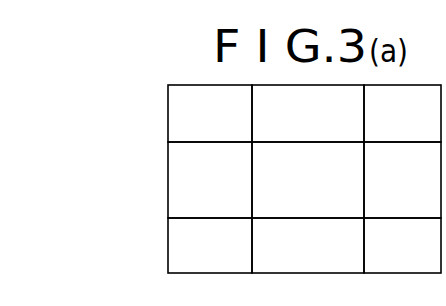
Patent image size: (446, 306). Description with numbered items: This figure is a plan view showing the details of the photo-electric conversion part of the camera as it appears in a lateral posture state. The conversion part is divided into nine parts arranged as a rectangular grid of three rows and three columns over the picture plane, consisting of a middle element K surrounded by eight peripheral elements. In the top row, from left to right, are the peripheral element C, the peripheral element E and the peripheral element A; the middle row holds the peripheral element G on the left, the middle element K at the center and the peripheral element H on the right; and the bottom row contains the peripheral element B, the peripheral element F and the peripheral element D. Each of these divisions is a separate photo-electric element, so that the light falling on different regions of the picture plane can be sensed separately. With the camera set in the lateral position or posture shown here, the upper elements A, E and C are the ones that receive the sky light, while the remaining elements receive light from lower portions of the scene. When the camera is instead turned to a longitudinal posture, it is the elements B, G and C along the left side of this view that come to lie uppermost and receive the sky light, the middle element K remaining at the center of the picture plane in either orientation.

The peripheral element C is at (210, 113).
The peripheral element E is at (308, 113).
The peripheral element A is at (402, 113).
The peripheral element G is at (210, 180).
The middle element K is at (308, 180).
The peripheral element H is at (402, 180).
The peripheral element B is at (210, 245).
The peripheral element F is at (308, 245).
The peripheral element D is at (402, 245).